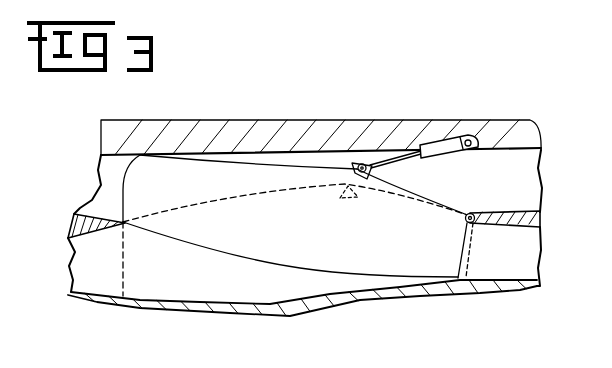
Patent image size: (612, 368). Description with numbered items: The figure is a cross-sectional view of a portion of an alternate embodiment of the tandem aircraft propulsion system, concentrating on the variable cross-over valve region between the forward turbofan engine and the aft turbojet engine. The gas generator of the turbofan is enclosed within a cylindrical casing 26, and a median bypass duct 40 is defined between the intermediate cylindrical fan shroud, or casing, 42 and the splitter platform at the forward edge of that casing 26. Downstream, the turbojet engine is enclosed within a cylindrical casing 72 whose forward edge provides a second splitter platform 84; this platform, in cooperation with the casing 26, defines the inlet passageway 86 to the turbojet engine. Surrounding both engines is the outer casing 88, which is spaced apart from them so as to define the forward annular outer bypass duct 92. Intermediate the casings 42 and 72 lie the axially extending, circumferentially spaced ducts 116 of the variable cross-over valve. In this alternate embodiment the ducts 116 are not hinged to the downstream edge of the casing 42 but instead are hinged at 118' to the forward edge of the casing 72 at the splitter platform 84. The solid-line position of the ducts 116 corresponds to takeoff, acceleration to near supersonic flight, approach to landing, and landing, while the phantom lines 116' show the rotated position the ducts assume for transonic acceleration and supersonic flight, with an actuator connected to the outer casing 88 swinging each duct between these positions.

The cylindrical casing 26 is at (317, 301).
The median bypass duct 40 is at (72, 272).
The intermediate cylindrical fan shroud 42 is at (92, 238).
The cylindrical casing 72 is at (528, 206).
The second splitter platform 84 is at (472, 225).
The inlet passageway 86 is at (530, 263).
The outer casing 88 is at (322, 152).
The forward annular outer bypass duct 92 is at (100, 187).
The ducts 116 is at (290, 187).
The ducts in rotated position 116' is at (274, 240).
The hinge 118' is at (436, 192).